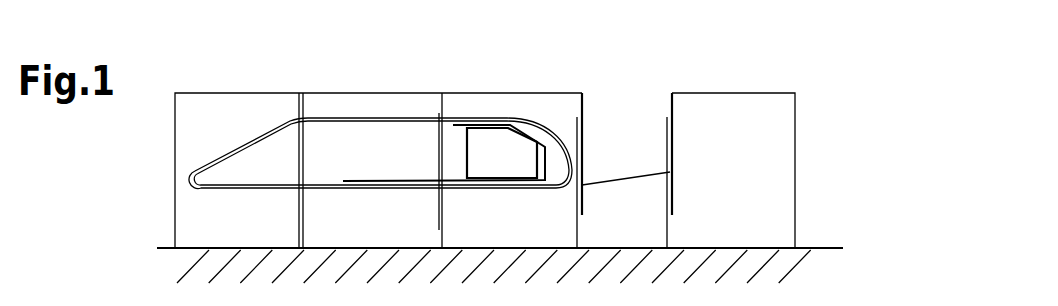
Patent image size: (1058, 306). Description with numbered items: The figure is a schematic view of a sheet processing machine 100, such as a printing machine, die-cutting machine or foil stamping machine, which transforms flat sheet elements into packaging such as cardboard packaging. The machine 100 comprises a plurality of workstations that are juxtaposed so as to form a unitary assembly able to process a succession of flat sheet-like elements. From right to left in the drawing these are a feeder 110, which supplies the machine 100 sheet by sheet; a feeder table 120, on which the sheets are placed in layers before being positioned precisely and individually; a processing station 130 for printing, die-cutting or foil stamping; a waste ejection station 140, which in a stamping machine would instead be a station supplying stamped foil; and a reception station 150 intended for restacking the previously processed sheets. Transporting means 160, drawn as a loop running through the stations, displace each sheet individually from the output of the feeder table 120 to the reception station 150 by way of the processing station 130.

The sheet processing machine 100 is at (504, 142).
The feeder 110 is at (740, 92).
The feeder table 120 is at (638, 174).
The processing station 130 is at (498, 90).
The waste ejection station 140 is at (363, 92).
The reception station 150 is at (250, 92).
The transporting means 160 is at (243, 192).